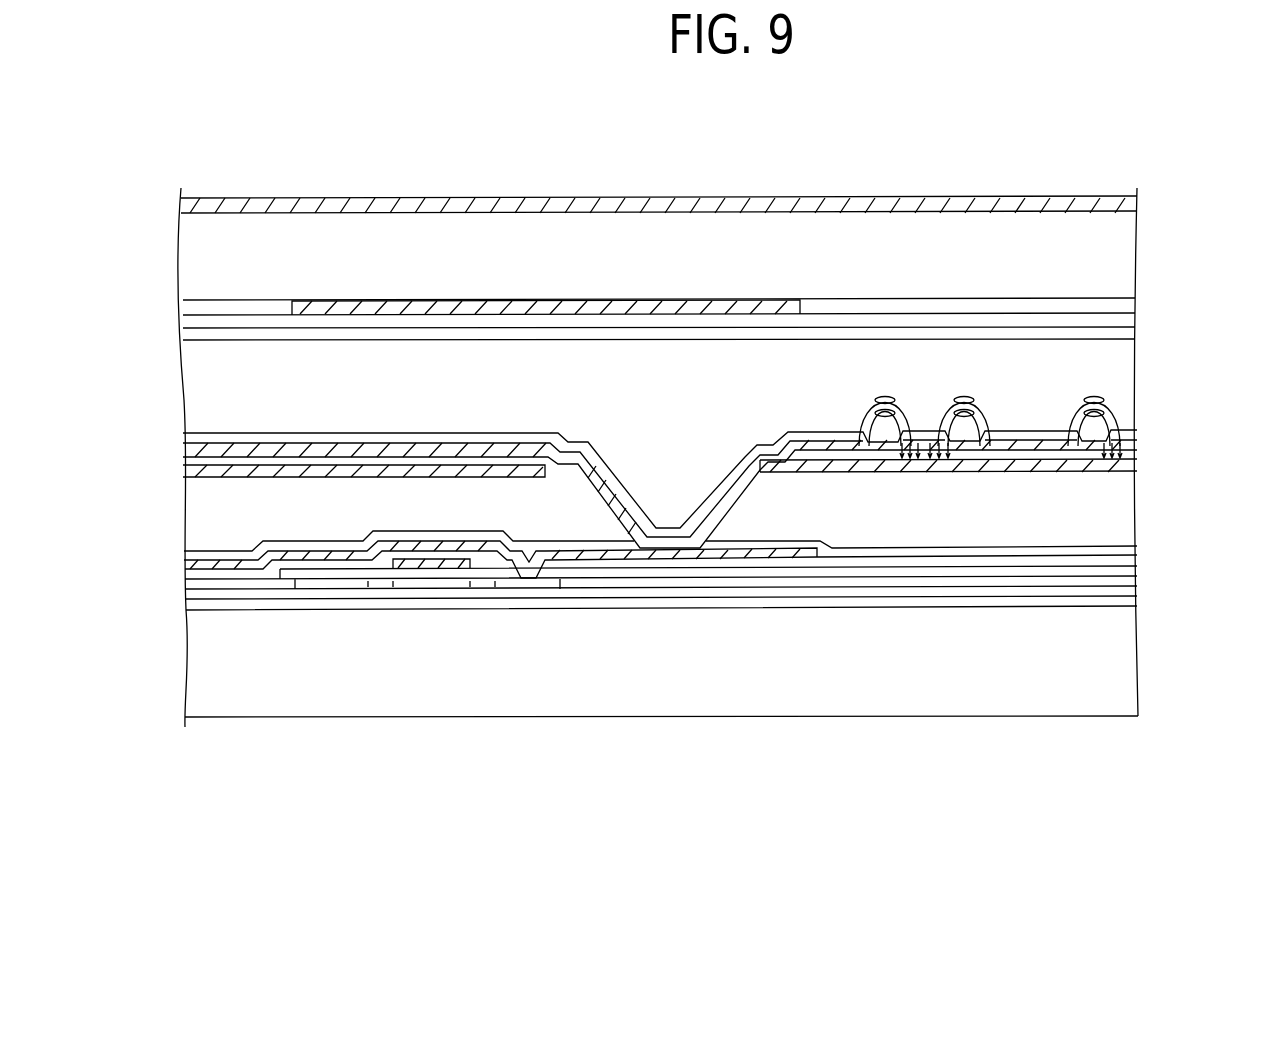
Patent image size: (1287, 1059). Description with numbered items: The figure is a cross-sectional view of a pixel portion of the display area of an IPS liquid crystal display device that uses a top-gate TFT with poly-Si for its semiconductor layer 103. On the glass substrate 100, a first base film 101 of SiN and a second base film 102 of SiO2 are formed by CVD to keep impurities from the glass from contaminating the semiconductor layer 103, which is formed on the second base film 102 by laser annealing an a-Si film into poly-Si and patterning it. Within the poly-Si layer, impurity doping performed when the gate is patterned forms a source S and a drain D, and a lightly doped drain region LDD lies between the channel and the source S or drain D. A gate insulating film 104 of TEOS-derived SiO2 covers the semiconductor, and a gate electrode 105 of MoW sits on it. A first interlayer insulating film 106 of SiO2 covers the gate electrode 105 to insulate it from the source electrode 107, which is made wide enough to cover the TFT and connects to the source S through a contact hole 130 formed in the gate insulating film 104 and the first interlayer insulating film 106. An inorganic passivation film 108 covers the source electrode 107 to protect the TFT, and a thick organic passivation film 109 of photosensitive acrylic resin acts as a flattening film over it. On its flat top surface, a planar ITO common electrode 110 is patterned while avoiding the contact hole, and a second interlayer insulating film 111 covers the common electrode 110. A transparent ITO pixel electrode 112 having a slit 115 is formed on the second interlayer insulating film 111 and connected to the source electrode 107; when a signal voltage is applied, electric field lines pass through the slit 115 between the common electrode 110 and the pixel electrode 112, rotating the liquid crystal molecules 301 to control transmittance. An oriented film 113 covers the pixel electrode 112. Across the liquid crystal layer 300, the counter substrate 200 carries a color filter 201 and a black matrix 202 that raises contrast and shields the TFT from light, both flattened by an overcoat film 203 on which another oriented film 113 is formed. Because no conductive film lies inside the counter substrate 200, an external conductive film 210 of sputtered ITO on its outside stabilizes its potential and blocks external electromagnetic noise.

The glass substrate 100 is at (1118, 660).
The first base film 101 is at (1125, 608).
The second base film 102 is at (1125, 588).
The semiconductor layer 103 is at (445, 584).
The gate insulating film 104 is at (277, 584).
The gate electrode 105 is at (422, 566).
The first interlayer insulating film 106 is at (1125, 563).
The source electrode 107 is at (633, 560).
The inorganic passivation film 108 is at (1125, 548).
The organic passivation film 109 is at (1125, 497).
The common electrode 110 is at (1133, 467).
The second interlayer insulating film 111 is at (1133, 450).
The pixel electrode 112 is at (1032, 443).
The oriented film 113 is at (1122, 332).
The slit 115 is at (922, 428).
The contact hole 130 is at (685, 471).
The counter substrate 200 is at (1118, 247).
The color filter 201 is at (873, 311).
The black matrix 202 is at (737, 312).
The overcoat film 203 is at (1128, 315).
The external conductive film 210 is at (978, 198).
The liquid crystal layer 300 is at (1122, 357).
The liquid crystal molecules 301 is at (1105, 400).
The drain D is at (332, 584).
The source S is at (530, 584).
The lightly doped drain layer LDD is at (372, 584).